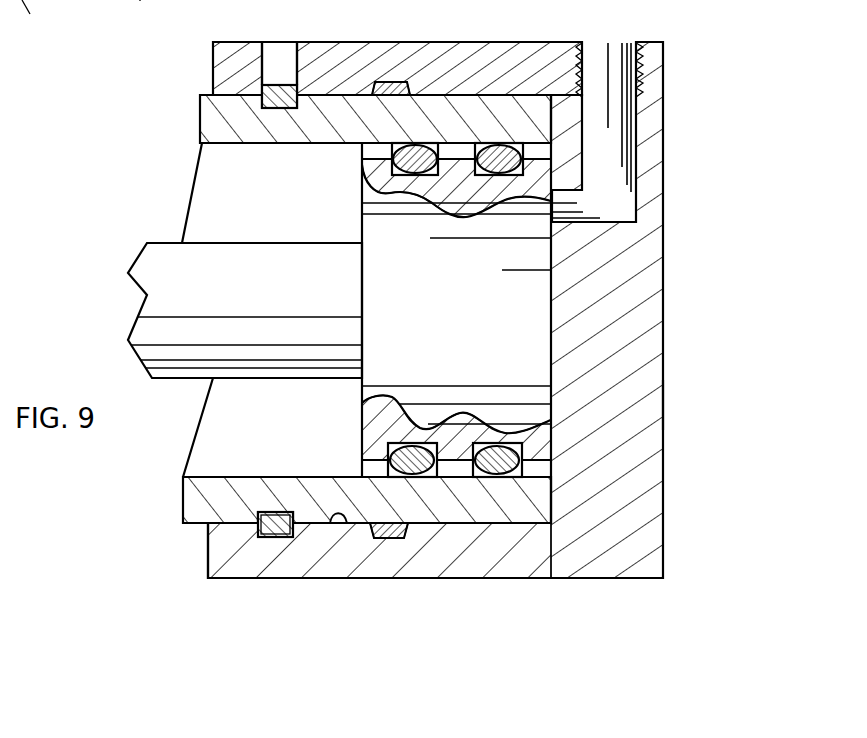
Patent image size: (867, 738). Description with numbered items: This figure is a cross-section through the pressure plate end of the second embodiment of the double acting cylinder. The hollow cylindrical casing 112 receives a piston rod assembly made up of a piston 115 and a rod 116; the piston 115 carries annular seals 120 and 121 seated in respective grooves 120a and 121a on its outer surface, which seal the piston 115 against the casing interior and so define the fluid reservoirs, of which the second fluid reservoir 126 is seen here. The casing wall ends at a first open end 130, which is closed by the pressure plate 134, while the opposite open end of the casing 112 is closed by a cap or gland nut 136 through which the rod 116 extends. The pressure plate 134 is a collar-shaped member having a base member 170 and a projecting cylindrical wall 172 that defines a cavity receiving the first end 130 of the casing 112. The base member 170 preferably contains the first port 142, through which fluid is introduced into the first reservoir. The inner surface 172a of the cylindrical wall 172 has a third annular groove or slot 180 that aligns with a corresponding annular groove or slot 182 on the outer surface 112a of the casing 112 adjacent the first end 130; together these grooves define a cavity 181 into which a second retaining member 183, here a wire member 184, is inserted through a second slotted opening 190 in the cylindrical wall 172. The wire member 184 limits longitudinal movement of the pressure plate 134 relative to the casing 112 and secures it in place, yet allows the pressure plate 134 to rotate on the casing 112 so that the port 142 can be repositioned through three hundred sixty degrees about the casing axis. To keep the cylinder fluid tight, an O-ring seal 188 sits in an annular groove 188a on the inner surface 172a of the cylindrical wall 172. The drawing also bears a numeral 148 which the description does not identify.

The cylindrical casing 112 is at (205, 510).
The outer surface of cylindrical casing 112a is at (273, 130).
The piston 115 is at (540, 440).
The rod 116 is at (152, 261).
The annular seal 120 is at (417, 477).
The groove 120a is at (433, 443).
The annular seal 121 is at (508, 470).
The groove 121a is at (512, 443).
The second fluid reservoir 126 is at (209, 208).
The first open end 130 is at (604, 128).
The pressure plate 134 is at (692, 400).
The cap or gland nut 136 is at (15, 22).
The first port 142 is at (598, 48).
The fastener 148 is at (133, 6).
The base member 170 is at (612, 305).
The projecting cylindrical wall 172 is at (366, 580).
The inner surface of cylindrical wall 172a is at (344, 512).
The third annular groove or slot 180 is at (285, 537).
The cavity 181 is at (286, 133).
The annular groove or slot 182 is at (290, 512).
The second retaining member 183 is at (287, 58).
The wire member 184 is at (293, 535).
The O-ring seal 188 is at (393, 538).
The annular groove 188a is at (407, 80).
The second slotted opening 190 is at (272, 32).